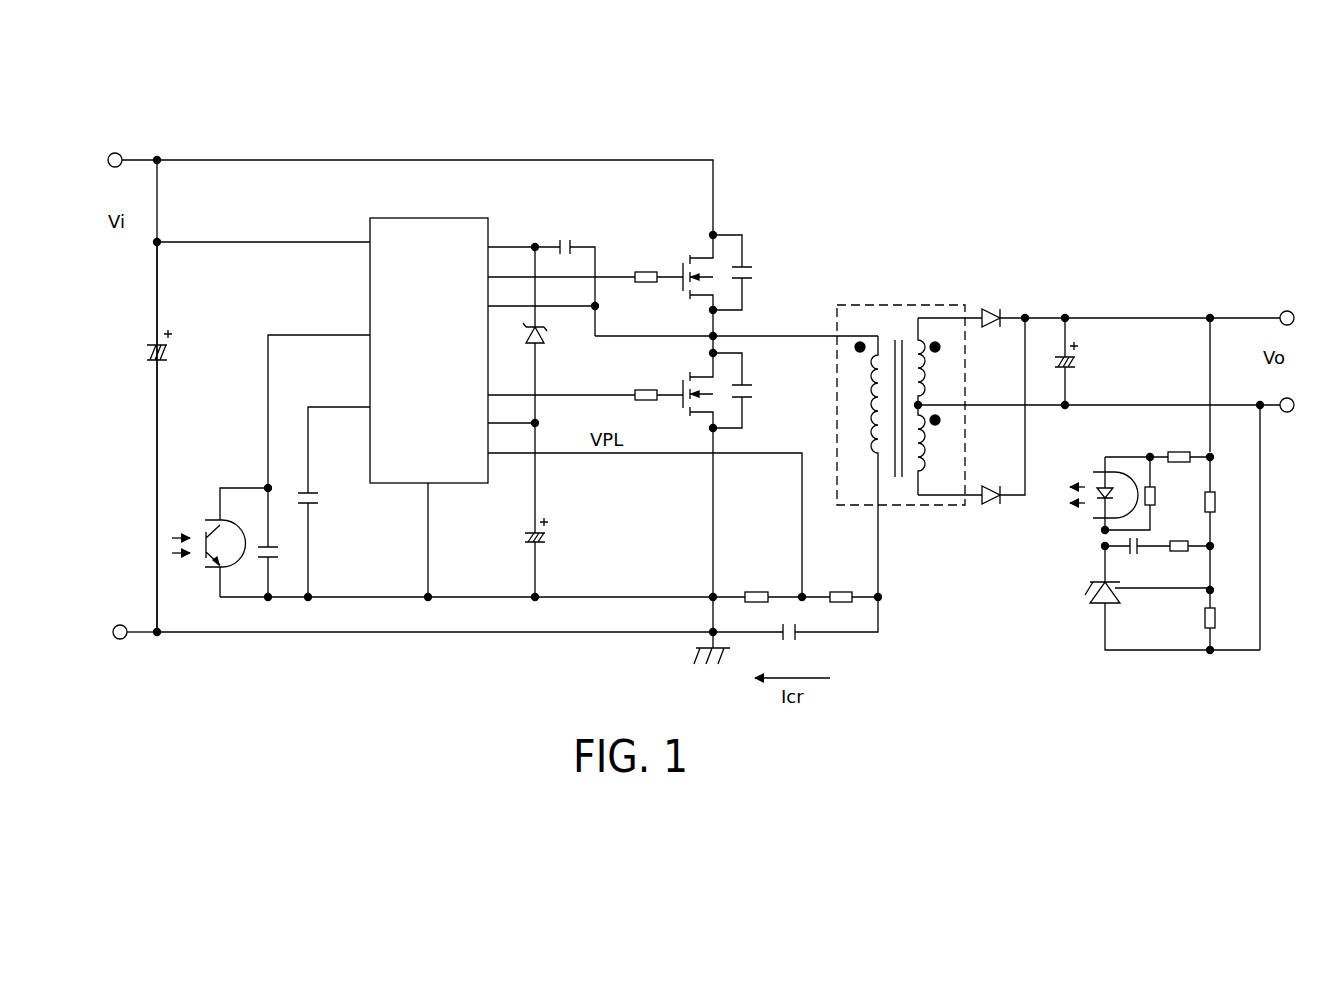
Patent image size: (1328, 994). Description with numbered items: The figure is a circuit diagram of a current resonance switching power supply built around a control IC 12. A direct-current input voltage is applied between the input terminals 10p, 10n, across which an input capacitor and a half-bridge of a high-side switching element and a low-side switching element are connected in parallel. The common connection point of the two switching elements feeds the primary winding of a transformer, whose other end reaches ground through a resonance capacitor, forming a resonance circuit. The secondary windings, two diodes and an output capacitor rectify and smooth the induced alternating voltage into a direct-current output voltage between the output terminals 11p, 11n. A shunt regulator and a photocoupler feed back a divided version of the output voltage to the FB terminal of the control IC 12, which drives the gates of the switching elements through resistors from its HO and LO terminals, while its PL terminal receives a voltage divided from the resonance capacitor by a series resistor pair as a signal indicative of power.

The input terminal 10p is at (115, 152).
The input terminal 10n is at (121, 624).
The output terminal 11p is at (1288, 311).
The output terminal 11n is at (1288, 412).
The control IC 12 is at (480, 218).